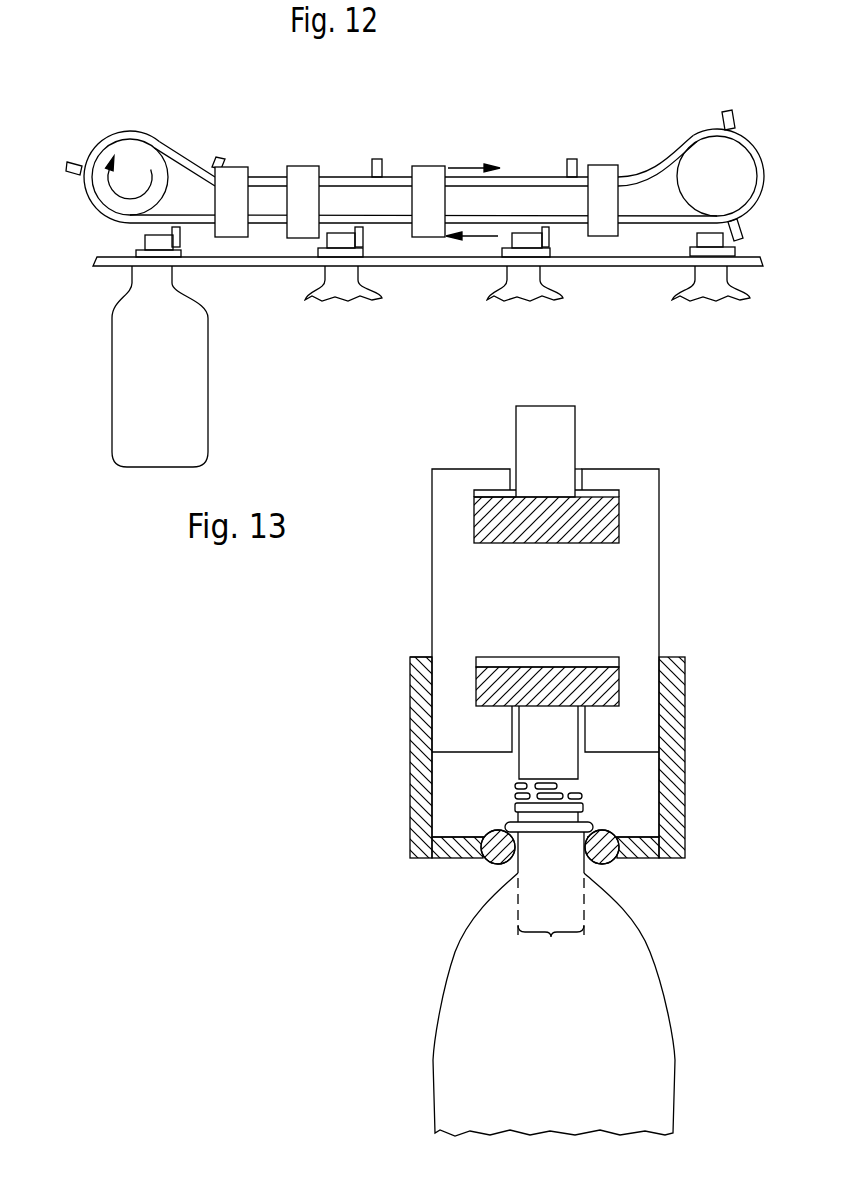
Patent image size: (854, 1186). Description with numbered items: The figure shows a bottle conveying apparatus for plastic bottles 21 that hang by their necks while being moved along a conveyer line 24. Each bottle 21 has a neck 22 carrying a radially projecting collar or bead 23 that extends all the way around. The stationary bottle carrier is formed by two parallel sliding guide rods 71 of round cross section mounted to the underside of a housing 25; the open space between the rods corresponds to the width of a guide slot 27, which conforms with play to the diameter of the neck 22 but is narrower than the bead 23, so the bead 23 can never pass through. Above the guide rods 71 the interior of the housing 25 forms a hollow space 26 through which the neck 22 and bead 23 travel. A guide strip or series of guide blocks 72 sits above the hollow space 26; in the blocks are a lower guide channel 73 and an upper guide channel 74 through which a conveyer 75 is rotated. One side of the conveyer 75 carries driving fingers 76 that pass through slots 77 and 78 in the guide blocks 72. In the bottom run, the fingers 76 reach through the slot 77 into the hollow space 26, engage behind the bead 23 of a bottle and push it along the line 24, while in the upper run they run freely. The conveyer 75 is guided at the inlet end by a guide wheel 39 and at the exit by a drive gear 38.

In FIG. 12, the bottle 21 is at (155, 435).
In FIG. 13, the bottle 21 is at (617, 1010).
In FIG. 12, the neck 22 is at (150, 242).
In FIG. 13, the neck 22 is at (517, 793).
In FIG. 12, the collar or bead 23 is at (152, 253).
In FIG. 13, the collar or bead 23 is at (533, 826).
In FIG. 12, the conveyer line 24 is at (552, 148).
In FIG. 13, the conveyer line 24 is at (380, 680).
In FIG. 13, the housing 25 is at (675, 777).
In FIG. 13, the hollow space 26 is at (513, 765).
In FIG. 13, the guide slot 27 is at (551, 920).
In FIG. 12, the drive gear 38 is at (130, 157).
In FIG. 12, the guide wheel 39 is at (732, 162).
In FIG. 12, the sliding guide rods 71 is at (248, 263).
In FIG. 13, the sliding guide rods 71 is at (497, 850).
In FIG. 12, the guide blocks 72 is at (235, 172).
In FIG. 13, the guide blocks 72 is at (613, 576).
In FIG. 13, the lower guide channel 73 is at (598, 660).
In FIG. 13, the upper guide channel 74 is at (492, 497).
In FIG. 12, the conveyer 75 is at (537, 180).
In FIG. 13, the conveyer 75 is at (604, 536).
In FIG. 12, the driving fingers 76 is at (360, 245).
In FIG. 13, the driving fingers 76 is at (554, 422).
In FIG. 13, the slot 77 is at (500, 755).
In FIG. 13, the slot 78 is at (584, 470).